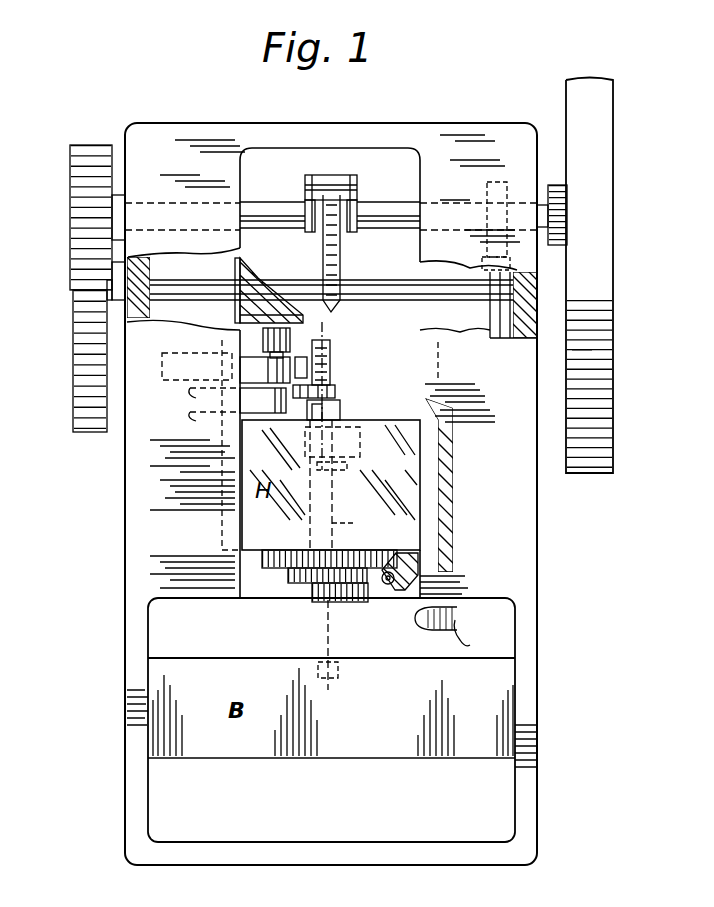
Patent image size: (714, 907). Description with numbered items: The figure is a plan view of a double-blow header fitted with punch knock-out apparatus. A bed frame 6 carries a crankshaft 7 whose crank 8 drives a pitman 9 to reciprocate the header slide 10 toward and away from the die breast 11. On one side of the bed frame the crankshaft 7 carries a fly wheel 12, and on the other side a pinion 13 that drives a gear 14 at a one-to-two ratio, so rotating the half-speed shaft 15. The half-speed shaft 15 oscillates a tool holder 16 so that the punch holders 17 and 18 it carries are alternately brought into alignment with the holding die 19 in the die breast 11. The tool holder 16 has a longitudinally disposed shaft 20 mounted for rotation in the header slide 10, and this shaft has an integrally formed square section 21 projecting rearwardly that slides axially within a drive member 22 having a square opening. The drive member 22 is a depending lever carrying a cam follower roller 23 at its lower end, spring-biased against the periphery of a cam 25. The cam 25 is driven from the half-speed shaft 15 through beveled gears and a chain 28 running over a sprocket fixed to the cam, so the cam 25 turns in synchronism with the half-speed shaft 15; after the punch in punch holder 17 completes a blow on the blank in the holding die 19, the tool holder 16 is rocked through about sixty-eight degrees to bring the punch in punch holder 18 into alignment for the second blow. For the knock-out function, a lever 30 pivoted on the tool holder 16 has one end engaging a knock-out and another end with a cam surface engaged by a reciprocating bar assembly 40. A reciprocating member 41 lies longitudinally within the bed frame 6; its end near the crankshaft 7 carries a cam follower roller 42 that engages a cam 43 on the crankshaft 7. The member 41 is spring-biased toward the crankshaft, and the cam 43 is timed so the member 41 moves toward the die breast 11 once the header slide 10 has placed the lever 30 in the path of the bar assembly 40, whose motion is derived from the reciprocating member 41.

The bed frame 6 is at (537, 556).
The crankshaft 7 is at (408, 182).
The crank 8 is at (352, 210).
The pitman 9 is at (343, 262).
The header slide 10 is at (400, 464).
The die breast 11 is at (382, 722).
The fly wheel 12 is at (603, 183).
The pinion 13 is at (72, 204).
The gear 14 is at (78, 330).
The half-speed shaft 15 is at (395, 300).
The tool holder 16 is at (292, 568).
The punch holder 17 is at (320, 598).
The punch holder 18 is at (354, 600).
The holding die 19 is at (338, 664).
The shaft 20 is at (356, 523).
The section 21 is at (332, 352).
The drive member 22 is at (337, 390).
The cam follower roller 23 is at (283, 345).
The cam 25 is at (257, 370).
The chain 28 is at (278, 300).
The lever 30 is at (412, 580).
The reciprocating bar assembly 40 is at (454, 633).
The reciprocating member 41 is at (490, 316).
The cam follower roller 42 is at (552, 229).
The cam 43 is at (508, 190).